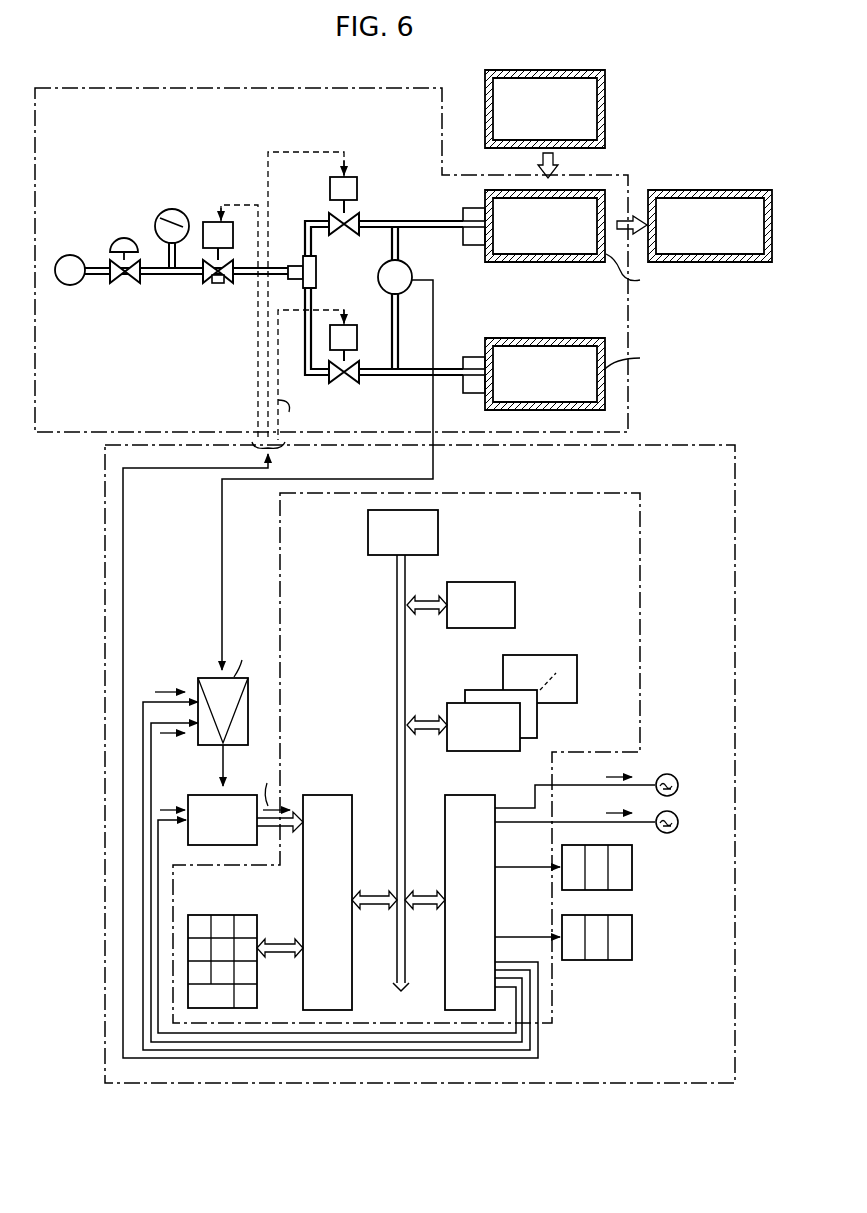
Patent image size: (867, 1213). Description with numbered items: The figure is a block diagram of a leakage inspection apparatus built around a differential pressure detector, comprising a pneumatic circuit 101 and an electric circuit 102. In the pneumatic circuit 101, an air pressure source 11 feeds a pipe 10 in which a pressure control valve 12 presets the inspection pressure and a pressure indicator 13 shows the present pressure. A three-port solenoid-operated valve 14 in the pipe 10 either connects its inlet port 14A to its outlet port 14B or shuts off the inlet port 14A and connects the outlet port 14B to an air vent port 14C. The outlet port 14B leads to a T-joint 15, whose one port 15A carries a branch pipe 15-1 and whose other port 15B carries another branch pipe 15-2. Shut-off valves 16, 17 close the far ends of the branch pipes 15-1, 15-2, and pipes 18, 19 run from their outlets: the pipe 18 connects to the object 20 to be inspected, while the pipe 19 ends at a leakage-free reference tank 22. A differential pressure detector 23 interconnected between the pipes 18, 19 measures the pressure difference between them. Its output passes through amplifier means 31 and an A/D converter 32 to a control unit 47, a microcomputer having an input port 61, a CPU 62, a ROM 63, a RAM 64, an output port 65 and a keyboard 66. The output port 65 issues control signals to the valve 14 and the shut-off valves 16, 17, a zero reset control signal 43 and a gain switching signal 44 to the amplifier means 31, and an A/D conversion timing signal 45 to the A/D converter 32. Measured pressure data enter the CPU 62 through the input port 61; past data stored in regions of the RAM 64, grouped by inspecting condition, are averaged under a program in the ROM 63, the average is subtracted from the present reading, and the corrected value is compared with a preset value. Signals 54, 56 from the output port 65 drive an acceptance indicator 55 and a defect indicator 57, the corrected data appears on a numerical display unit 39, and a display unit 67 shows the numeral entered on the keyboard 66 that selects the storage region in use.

The pipe 10 is at (96, 276).
The air pressure source 11 is at (70, 255).
The pressure control valve 12 is at (133, 283).
The pressure indicator 13 is at (165, 208).
The three-port solenoid-operated valve 14 is at (210, 222).
The inlet port 14A is at (202, 280).
The outlet port 14B is at (235, 281).
The air vent port 14C is at (217, 285).
The T-joint 15 is at (318, 271).
The port of T-joint 15A is at (316, 258).
The port of T-joint 15B is at (316, 289).
The branch pipe 15-1 is at (310, 222).
The branch pipe 15-2 is at (318, 382).
The shut-off valve 16 is at (358, 218).
The shut-off valve 17 is at (358, 372).
The pipe 18 is at (426, 218).
The pipe 19 is at (412, 367).
The object 20 is at (592, 262).
The leakage-free reference tank 22 is at (512, 338).
The differential pressure detector 23 is at (408, 268).
The amplifier means 31 is at (212, 677).
The A/D converter 32 is at (210, 795).
The numerical display unit 39 is at (640, 852).
The zero reset control signal 43 is at (166, 690).
The gain switching signal 44 is at (168, 737).
The A/D conversion timing signal 45 is at (167, 808).
The control unit 47 is at (640, 551).
The lamp drive signal 54 is at (608, 777).
The acceptance indicator 55 is at (680, 787).
The lamp drive signal 56 is at (608, 813).
The defect indicator 57 is at (680, 824).
The input port 61 is at (335, 795).
The central processing unit 62 is at (440, 522).
The read-only memory 63 is at (505, 582).
The random-access memory 64 is at (503, 712).
The output port 65 is at (474, 795).
The keyboard 66 is at (242, 914).
The display unit 67 is at (640, 922).
The pneumatic circuit 101 is at (205, 88).
The electric circuit 102 is at (700, 444).